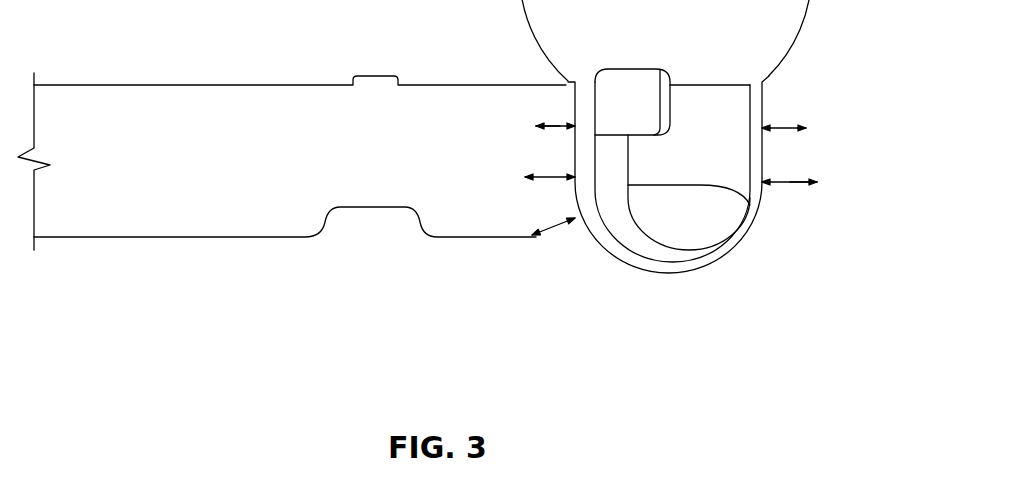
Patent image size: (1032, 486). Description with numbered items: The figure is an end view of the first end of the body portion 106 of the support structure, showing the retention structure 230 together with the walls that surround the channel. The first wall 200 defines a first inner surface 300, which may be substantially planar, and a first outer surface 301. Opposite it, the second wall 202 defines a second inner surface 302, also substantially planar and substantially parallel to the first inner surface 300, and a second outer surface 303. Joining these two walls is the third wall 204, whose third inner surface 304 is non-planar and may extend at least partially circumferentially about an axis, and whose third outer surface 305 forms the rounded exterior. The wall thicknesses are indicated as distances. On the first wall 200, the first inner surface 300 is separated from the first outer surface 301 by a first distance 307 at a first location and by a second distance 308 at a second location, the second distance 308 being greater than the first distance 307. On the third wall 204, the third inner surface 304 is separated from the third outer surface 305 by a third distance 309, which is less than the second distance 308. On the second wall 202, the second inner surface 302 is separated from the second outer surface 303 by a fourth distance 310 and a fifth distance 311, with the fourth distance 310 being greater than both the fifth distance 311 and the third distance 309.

The body portion 106 is at (220, 113).
The first wall 200 is at (658, 191).
The second wall 202 is at (788, 215).
The third wall 204 is at (683, 307).
The retention structure 230 is at (636, 90).
The first inner surface 300 is at (542, 252).
The first outer surface 301 is at (533, 143).
The second inner surface 302 is at (752, 155).
The second outer surface 303 is at (817, 152).
The third inner surface 304 is at (643, 268).
The third outer surface 305 is at (768, 288).
The first distance 307 is at (550, 124).
The second distance 308 is at (550, 176).
The third distance 309 is at (534, 233).
The fourth distance 310 is at (787, 183).
The fifth distance 311 is at (782, 127).